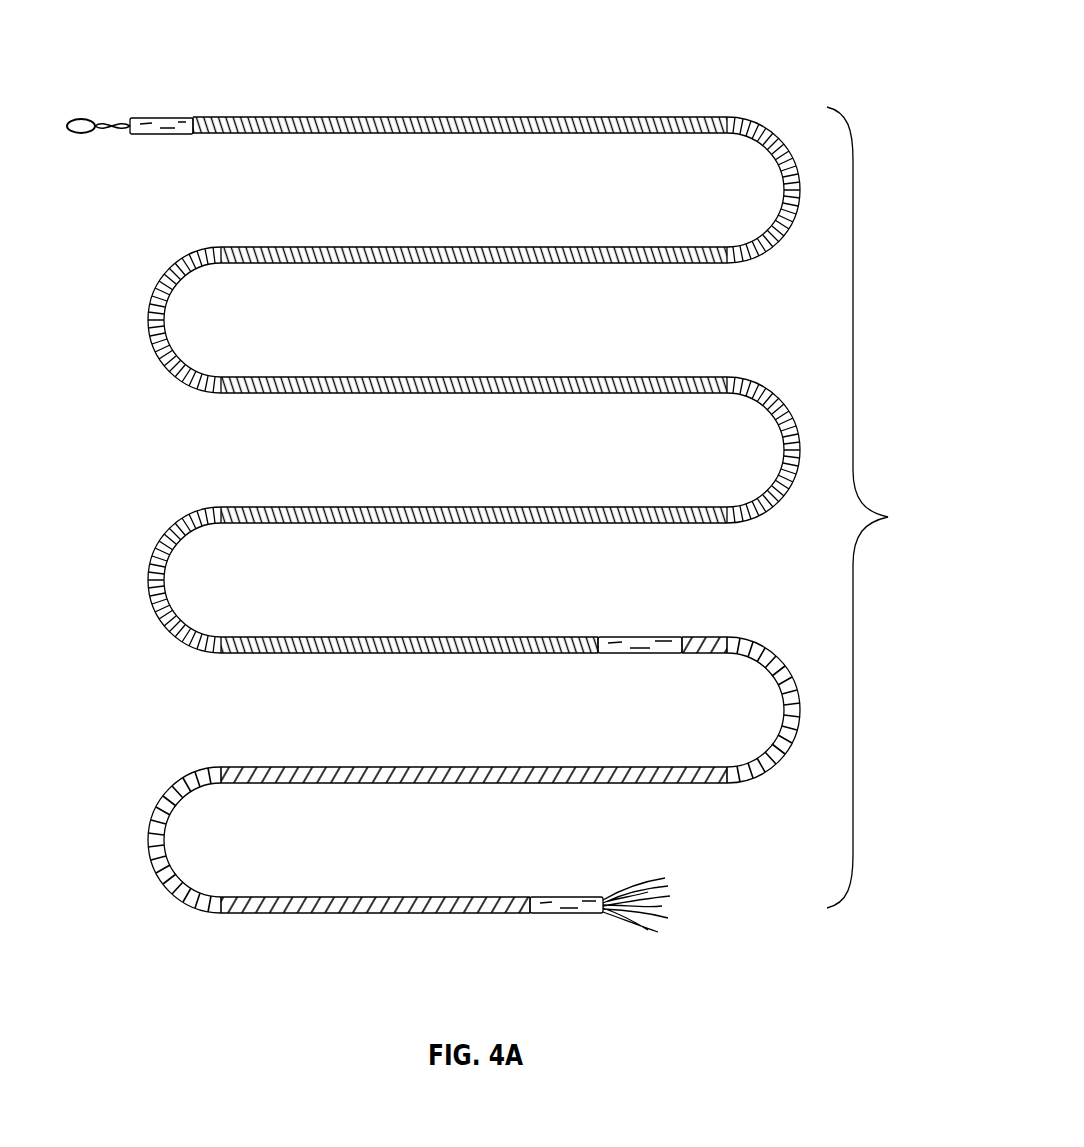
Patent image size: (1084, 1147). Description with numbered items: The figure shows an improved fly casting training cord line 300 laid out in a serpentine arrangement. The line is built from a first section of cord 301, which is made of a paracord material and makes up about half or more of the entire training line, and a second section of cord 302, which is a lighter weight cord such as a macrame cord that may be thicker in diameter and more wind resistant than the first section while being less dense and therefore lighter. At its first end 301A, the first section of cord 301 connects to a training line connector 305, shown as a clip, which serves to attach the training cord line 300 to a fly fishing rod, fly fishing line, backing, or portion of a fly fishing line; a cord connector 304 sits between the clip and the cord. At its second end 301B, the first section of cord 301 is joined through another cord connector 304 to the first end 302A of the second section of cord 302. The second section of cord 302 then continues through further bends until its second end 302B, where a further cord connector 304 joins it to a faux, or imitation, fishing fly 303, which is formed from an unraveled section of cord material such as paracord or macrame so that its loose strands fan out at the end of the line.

The improved fly casting training cord line 300 is at (503, 512).
The first section of cord 301 is at (510, 118).
The first end of the first section of cord 301A is at (193, 135).
The second end of the first section of cord 301B is at (598, 655).
The second section of cord 302 is at (728, 637).
The first end of the second section of cord 302A is at (686, 655).
The second end of the second section of cord 302B is at (530, 915).
The faux fishing fly 303 is at (615, 883).
The cord connector 304 is at (150, 118).
The training line connector 305 is at (68, 118).